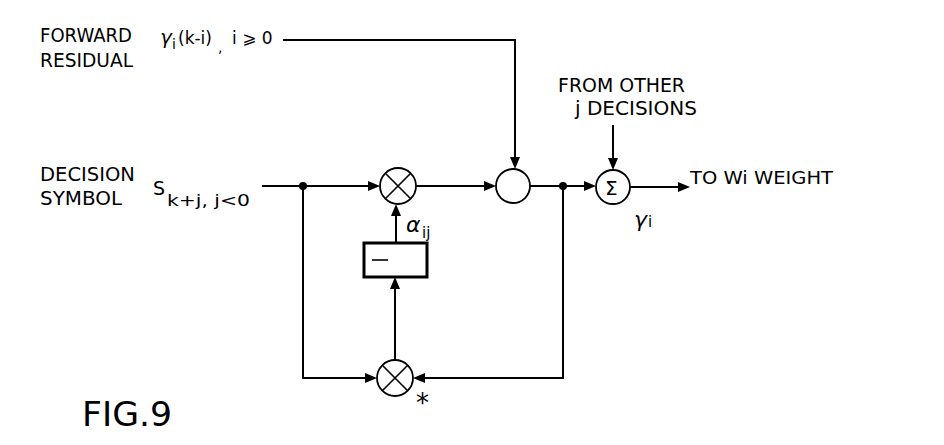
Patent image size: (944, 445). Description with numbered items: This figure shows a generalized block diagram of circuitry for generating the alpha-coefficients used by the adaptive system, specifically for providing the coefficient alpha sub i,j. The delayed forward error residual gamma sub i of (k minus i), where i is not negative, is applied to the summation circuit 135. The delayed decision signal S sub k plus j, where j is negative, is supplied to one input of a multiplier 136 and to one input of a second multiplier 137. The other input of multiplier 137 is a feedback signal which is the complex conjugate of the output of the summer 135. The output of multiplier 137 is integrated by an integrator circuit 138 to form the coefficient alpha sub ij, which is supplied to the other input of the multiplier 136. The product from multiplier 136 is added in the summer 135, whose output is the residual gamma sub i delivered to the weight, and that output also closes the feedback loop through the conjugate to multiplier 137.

The summation circuit 135 is at (527, 174).
The multiplier 136 is at (412, 173).
The multiplier 137 is at (409, 367).
The integrator circuit 138 is at (427, 265).